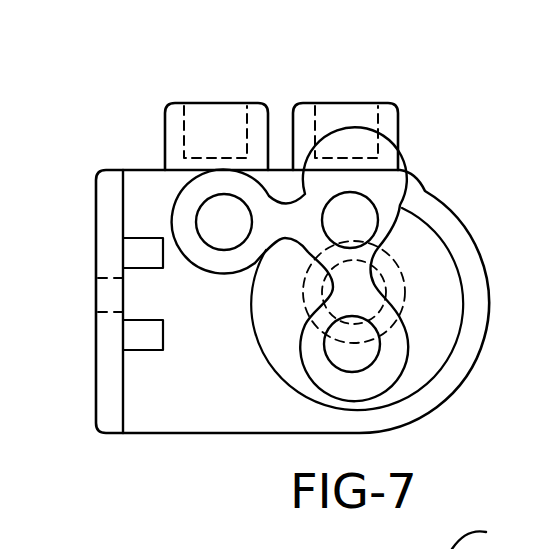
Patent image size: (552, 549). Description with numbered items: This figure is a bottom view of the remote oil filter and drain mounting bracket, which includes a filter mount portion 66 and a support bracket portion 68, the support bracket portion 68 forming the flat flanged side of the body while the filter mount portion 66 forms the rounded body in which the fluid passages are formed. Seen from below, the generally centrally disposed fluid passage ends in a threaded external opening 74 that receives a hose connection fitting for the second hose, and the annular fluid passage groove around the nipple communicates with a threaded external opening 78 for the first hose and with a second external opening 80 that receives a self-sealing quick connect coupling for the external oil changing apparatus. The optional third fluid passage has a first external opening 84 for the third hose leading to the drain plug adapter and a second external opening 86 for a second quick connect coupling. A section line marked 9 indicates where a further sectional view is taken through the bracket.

The filter mount portion 66 is at (537, 282).
The support bracket portion 68 is at (127, 412).
The threaded external opening 74 is at (366, 353).
The threaded external opening 78 is at (363, 210).
The second external opening 80 is at (372, 128).
The first external opening 84 is at (222, 229).
The second external opening 86 is at (188, 149).
The section line 9- 9 is at (217, 68).